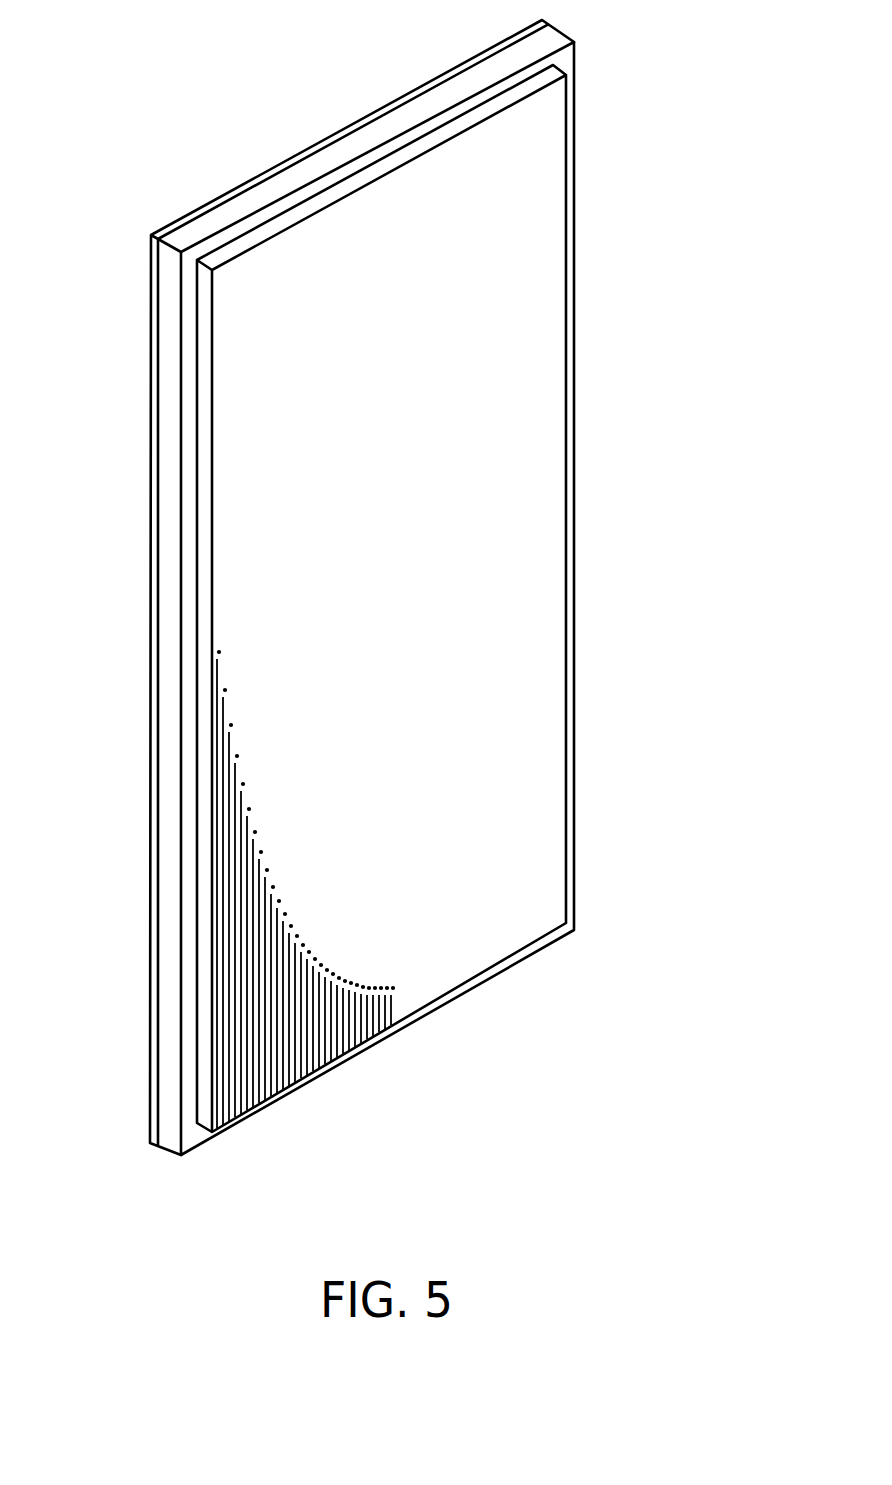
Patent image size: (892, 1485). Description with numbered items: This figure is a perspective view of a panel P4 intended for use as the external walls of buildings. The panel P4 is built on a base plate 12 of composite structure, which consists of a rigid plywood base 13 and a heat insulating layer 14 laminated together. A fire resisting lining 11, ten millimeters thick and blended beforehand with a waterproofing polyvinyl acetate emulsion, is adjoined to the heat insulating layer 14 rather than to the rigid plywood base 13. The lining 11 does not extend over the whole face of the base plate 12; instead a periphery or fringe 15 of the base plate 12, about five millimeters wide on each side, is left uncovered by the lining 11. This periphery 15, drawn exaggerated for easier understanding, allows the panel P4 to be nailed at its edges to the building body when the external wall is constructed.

The fire resisting lining 11 is at (223, 507).
The base plate 12 is at (358, 587).
The rigid plywood base 13 is at (192, 212).
The heat insulating layer 14 is at (248, 197).
The periphery 15 is at (402, 142).
The panel P4 is at (581, 179).